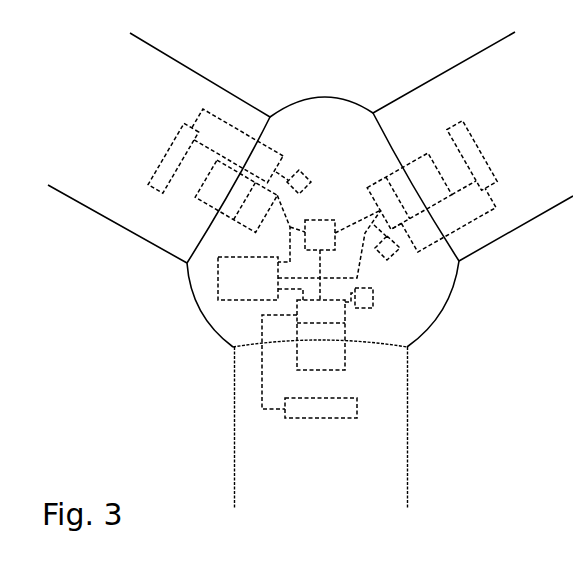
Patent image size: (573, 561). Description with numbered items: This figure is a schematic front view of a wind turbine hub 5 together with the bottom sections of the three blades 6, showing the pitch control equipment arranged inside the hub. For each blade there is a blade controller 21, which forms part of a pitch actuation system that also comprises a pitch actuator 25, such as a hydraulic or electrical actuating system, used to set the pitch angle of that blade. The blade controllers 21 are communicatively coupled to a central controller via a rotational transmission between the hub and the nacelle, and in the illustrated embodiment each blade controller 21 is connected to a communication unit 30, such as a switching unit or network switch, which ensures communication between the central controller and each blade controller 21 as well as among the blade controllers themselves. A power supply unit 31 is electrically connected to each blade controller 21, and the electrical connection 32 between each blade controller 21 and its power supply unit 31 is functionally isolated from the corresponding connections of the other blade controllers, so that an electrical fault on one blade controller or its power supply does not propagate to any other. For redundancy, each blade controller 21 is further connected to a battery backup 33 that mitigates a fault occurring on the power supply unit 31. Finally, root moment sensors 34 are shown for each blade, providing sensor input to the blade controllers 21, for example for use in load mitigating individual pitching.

The hub 5 is at (227, 330).
The blades 6 is at (90, 185).
The blade controller 21 is at (378, 192).
The pitch actuator 25 is at (423, 168).
The communication unit 30 is at (322, 227).
The power supply unit 31 is at (220, 292).
The electrical connection 32 is at (362, 258).
The battery backup 33 is at (363, 308).
The root moment sensor 34 is at (475, 140).